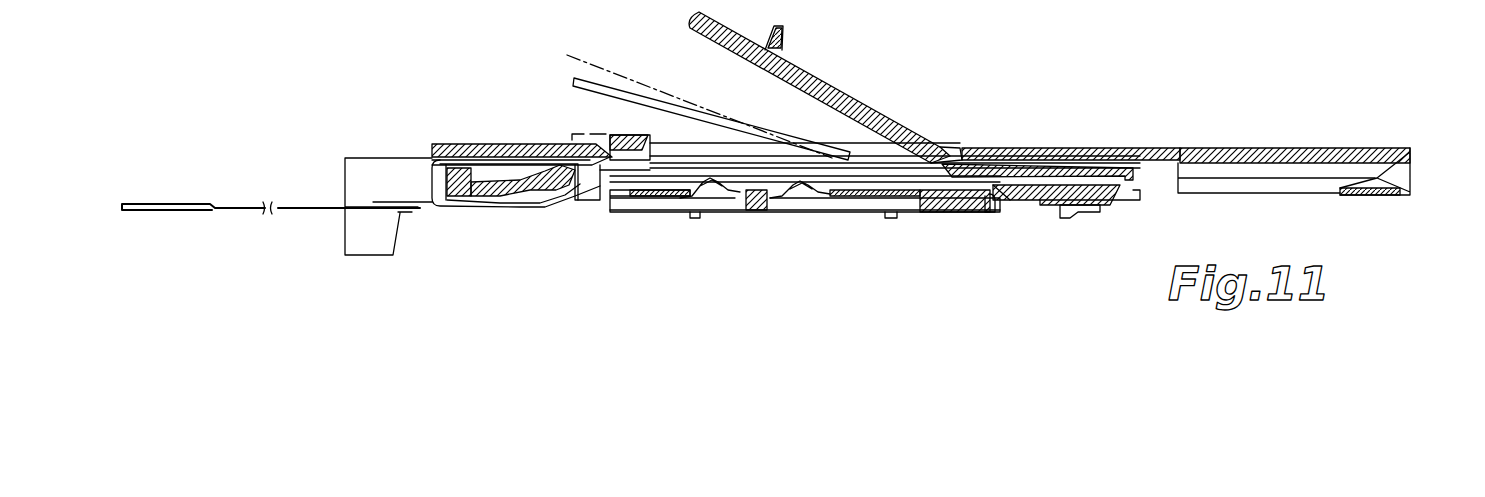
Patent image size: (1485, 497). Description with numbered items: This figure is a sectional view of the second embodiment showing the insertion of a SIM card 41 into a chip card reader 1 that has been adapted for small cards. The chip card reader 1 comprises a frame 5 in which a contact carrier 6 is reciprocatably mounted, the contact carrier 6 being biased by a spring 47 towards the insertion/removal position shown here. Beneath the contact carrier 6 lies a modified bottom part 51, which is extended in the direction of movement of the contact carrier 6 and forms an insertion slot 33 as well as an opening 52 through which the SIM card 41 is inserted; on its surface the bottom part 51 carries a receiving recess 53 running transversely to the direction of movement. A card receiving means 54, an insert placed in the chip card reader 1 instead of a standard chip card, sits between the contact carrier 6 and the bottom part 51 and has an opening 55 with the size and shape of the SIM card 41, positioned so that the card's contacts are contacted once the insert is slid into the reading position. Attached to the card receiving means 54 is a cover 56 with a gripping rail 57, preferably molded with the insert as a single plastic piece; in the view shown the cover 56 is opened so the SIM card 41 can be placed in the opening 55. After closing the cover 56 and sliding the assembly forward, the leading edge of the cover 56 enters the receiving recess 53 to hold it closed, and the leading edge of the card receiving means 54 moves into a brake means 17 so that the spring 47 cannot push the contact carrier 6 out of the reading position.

The chip card reader 1 is at (932, 220).
The frame 5 is at (362, 178).
The contact carrier 6 is at (800, 205).
The brake means 17 is at (510, 214).
The insertion slot 33 is at (1388, 178).
The SIM card 41 is at (682, 92).
The spring 47 is at (1085, 212).
The bottom part 51 is at (1215, 150).
The opening 52 is at (962, 150).
The receiving recess 53 is at (618, 134).
The card receiving means 54 is at (1050, 165).
The opening 55 is at (666, 172).
The cover 56 is at (838, 100).
The gripping rail 57 is at (783, 27).